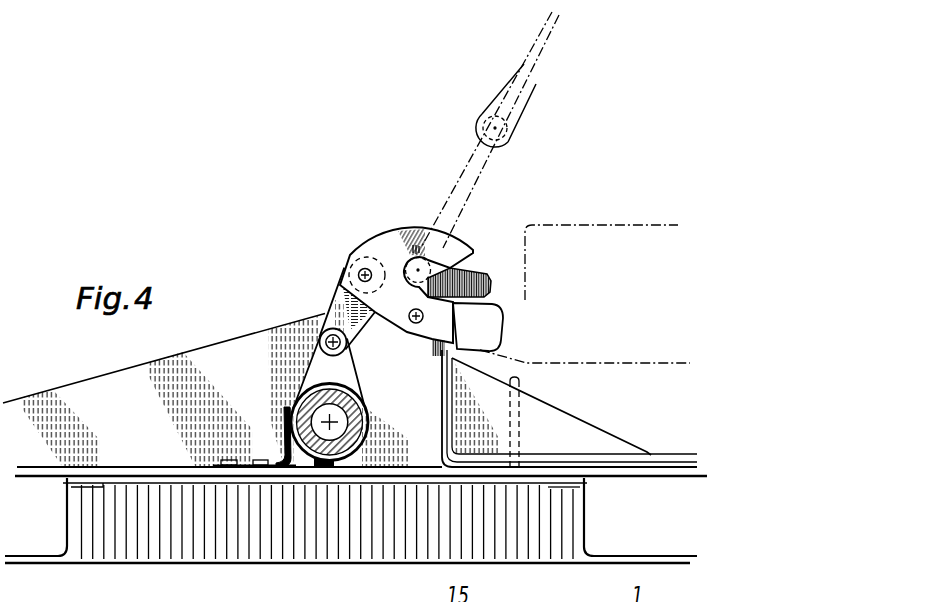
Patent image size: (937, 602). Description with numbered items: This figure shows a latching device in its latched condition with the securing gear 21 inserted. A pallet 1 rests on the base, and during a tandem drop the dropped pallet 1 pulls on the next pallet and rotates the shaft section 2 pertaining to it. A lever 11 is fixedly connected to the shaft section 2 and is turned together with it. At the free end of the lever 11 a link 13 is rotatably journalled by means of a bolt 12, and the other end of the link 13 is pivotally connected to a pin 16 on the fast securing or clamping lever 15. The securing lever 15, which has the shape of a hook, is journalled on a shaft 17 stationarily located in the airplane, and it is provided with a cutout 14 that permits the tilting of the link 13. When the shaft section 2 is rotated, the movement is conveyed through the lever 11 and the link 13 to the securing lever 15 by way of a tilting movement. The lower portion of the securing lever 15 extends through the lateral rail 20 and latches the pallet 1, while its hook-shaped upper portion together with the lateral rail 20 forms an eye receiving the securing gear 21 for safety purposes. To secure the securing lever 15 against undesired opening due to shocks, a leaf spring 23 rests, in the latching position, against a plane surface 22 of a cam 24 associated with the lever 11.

The pallet 1 is at (585, 240).
The shaft section 2 is at (337, 465).
The lever 11 is at (313, 367).
The bolt 12 is at (340, 348).
The link 13 is at (340, 307).
The cutout 14 is at (366, 238).
The securing lever 15 is at (398, 232).
The pin 16 is at (362, 268).
The shaft 17 is at (415, 322).
The lateral rail 20 is at (476, 262).
The securing gear 21 is at (462, 172).
The plane surface 22 is at (286, 407).
The leaf spring 23 is at (279, 458).
The cam 24 is at (322, 465).